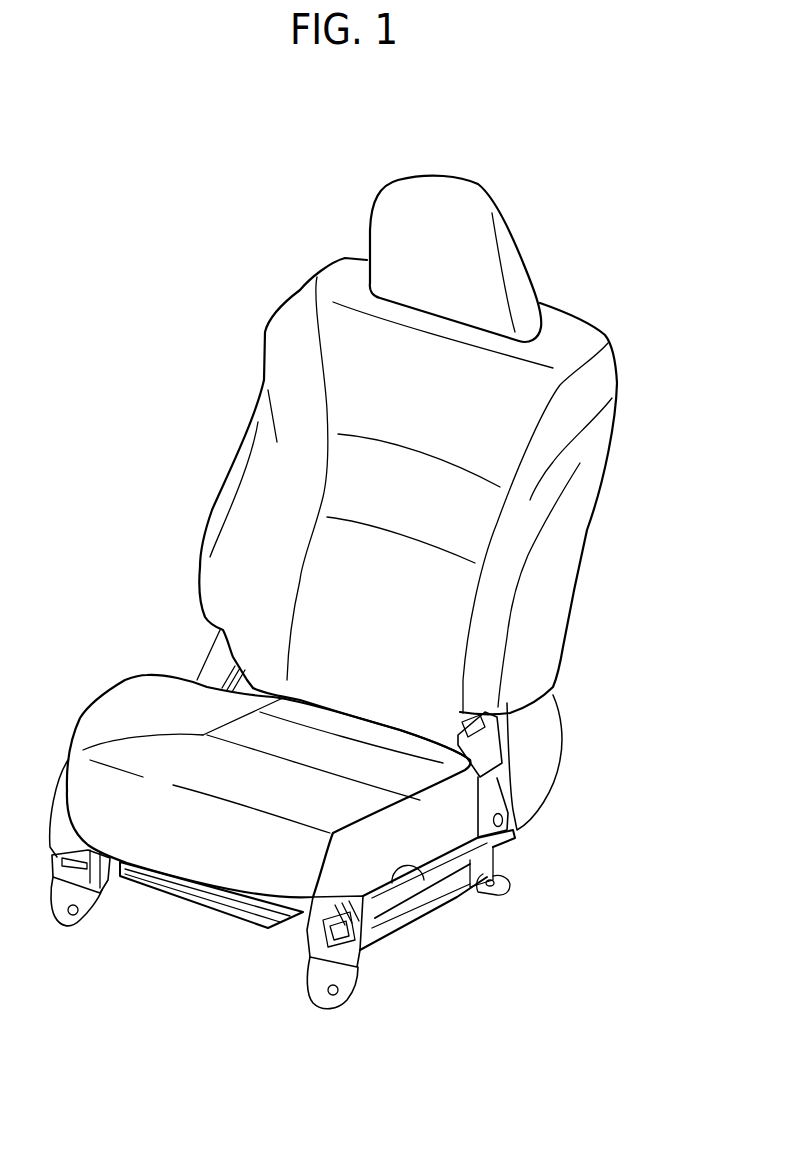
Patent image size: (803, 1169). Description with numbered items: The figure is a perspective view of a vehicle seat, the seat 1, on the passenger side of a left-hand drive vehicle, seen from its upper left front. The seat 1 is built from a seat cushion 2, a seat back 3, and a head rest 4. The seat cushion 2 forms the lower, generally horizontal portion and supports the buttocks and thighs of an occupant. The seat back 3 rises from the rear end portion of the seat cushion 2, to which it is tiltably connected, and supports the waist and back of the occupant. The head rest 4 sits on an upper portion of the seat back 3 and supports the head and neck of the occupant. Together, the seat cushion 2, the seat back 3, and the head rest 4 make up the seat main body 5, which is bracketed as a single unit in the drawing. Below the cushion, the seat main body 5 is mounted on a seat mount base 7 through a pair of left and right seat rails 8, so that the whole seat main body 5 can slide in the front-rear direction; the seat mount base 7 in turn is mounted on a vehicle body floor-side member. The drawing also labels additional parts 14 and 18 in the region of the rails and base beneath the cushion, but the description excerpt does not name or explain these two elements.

The seat 1 is at (601, 221).
The seat cushion 2 is at (182, 750).
The seat back 3 is at (260, 408).
The head rest 4 is at (382, 237).
The seat main body 5 is at (92, 266).
The seat mount base 7 is at (100, 900).
The seat rails 8 is at (110, 880).
The slide rail cover 14 is at (227, 907).
The rail foot 18 is at (268, 948).